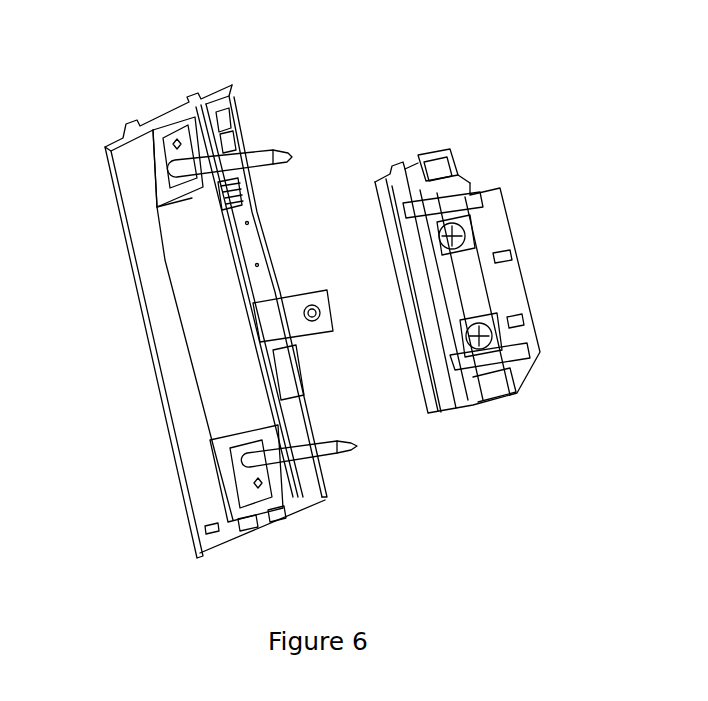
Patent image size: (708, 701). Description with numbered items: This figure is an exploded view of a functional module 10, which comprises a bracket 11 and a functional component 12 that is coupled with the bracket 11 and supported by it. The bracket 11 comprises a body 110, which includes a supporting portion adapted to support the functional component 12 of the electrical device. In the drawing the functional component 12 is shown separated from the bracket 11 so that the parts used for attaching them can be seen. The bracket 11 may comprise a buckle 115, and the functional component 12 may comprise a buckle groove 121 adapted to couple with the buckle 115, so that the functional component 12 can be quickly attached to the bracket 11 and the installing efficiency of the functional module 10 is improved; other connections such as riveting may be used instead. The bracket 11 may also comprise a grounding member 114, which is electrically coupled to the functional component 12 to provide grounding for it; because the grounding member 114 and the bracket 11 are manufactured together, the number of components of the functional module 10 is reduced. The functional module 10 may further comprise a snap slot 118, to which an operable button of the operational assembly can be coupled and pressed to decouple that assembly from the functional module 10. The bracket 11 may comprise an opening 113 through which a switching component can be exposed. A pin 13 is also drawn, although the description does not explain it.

The functional module 10 is at (301, 84).
The bracket 11 is at (130, 100).
The functional component 12 is at (503, 275).
The pin 13 is at (333, 448).
The body 110 is at (156, 288).
The opening 113 is at (215, 387).
The grounding member 114 is at (297, 323).
The buckle 115 is at (277, 418).
The snap slot 118 is at (268, 522).
The buckle groove 121 is at (448, 167).